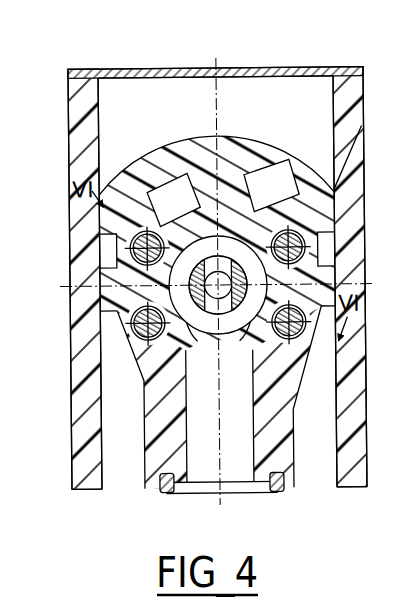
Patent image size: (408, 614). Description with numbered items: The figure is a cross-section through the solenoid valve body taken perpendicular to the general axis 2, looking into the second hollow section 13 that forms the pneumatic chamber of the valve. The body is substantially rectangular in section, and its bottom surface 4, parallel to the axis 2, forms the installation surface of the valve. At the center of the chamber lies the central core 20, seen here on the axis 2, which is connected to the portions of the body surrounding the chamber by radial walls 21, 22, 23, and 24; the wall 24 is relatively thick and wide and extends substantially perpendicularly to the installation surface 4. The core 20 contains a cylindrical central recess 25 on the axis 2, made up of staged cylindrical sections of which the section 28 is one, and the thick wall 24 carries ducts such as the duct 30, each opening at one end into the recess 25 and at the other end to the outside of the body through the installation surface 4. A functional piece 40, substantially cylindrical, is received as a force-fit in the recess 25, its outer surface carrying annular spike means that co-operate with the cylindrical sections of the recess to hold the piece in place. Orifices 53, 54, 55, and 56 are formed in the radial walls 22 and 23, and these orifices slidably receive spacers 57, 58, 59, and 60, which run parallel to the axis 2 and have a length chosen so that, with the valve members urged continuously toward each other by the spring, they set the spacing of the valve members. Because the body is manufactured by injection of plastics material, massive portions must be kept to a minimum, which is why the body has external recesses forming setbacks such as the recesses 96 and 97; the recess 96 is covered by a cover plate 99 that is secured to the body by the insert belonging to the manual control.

The general axis 2 is at (295, 300).
The bottom surface 4 is at (317, 488).
The second hollow section 13 is at (232, 260).
The central core 20 is at (258, 185).
The radial wall 21 is at (230, 158).
The radial wall 22 is at (147, 303).
The radial wall 23 is at (292, 195).
The thick wall 24 is at (143, 470).
The cylindrical central recess 25 is at (203, 338).
The cylindrical section 28 is at (118, 262).
The duct 30 is at (235, 455).
The functional piece 40 is at (72, 323).
The orifice 53 is at (143, 175).
The orifice 54 is at (364, 125).
The orifice 55 is at (298, 372).
The orifice 56 is at (148, 365).
The spacer 57 is at (103, 238).
The spacer 58 is at (322, 257).
The spacer 59 is at (254, 366).
The spacer 60 is at (160, 376).
The external recess 96 is at (159, 95).
The external recess 97 is at (116, 472).
The cover plate 99 is at (106, 68).